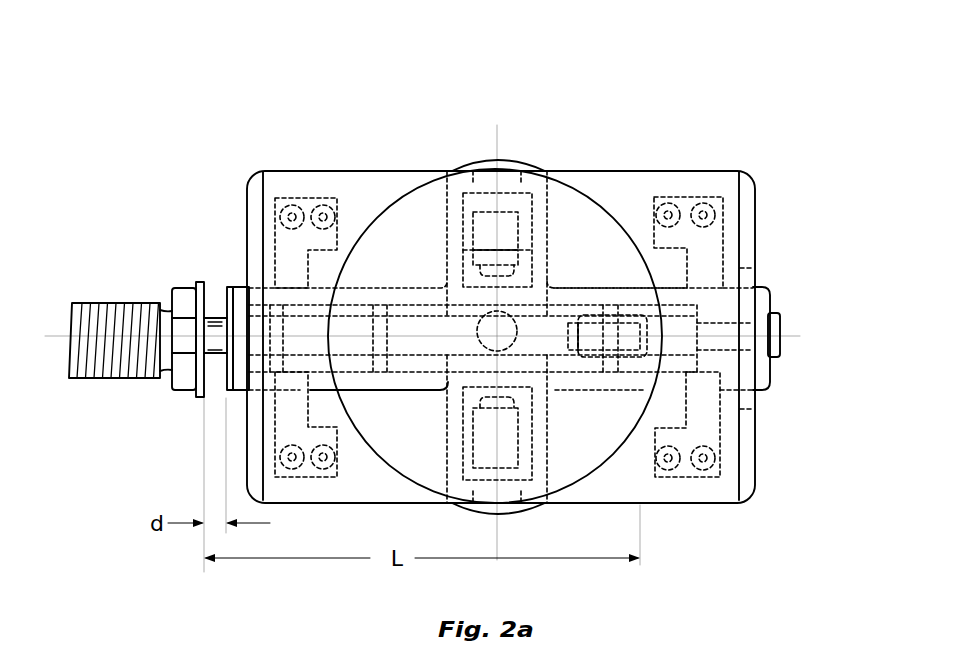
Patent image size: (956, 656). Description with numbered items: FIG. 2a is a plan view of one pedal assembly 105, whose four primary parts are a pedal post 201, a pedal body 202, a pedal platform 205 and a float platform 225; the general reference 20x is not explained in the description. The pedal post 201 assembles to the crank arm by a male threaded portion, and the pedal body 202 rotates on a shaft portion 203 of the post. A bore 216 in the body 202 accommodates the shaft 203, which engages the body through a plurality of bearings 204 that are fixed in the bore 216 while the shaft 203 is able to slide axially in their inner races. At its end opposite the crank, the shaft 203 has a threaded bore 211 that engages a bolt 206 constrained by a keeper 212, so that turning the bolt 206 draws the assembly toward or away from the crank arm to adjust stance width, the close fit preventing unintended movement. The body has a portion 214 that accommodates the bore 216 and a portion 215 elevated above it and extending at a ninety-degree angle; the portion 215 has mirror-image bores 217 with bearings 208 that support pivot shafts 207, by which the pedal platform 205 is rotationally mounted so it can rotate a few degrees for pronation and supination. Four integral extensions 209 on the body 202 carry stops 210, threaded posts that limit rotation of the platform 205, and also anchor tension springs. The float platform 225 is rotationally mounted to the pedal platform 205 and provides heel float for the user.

The pedal assembly 105 is at (491, 114).
The actuator 20x is at (228, 282).
The pedal post 201 is at (181, 275).
The pedal body 202 is at (762, 397).
The shaft portion 203 is at (225, 349).
The bearings 204 is at (283, 374).
The pedal platform 205 is at (656, 166).
The bolt 206 is at (783, 323).
The pivot shafts 207 is at (515, 160).
The bearings 208 is at (463, 207).
The integral extensions 209 is at (277, 458).
The stops 210 is at (708, 205).
The threaded bore 211 is at (571, 352).
The keeper 212 is at (697, 337).
The body portion 214 is at (577, 287).
The body portion 215 is at (448, 237).
The bore 216 is at (432, 373).
The mirror-image bores 217 is at (532, 218).
The float platform 225 is at (387, 460).